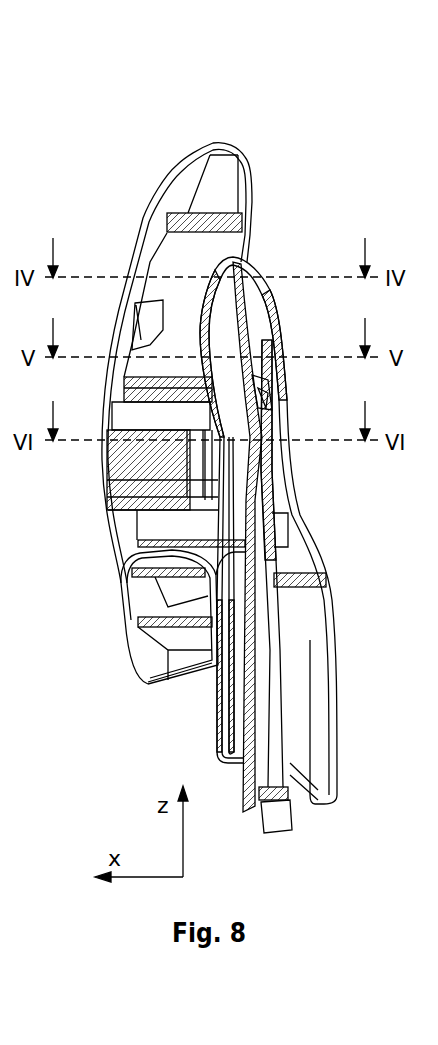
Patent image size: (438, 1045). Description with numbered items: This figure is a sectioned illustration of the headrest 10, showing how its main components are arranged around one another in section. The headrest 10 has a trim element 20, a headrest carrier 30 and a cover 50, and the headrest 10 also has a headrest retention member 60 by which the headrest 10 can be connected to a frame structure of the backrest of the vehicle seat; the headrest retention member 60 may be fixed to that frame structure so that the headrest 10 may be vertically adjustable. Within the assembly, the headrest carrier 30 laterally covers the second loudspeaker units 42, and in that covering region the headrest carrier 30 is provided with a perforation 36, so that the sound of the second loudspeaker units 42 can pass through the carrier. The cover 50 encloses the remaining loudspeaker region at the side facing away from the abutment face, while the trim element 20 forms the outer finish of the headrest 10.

The headrest 10 is at (131, 104).
The trim element 20 is at (122, 663).
The headrest carrier 30 is at (217, 172).
The perforation 36 is at (114, 588).
The second loudspeaker unit 42 is at (124, 483).
The cover 50 is at (302, 515).
The headrest retention member 60 is at (265, 655).